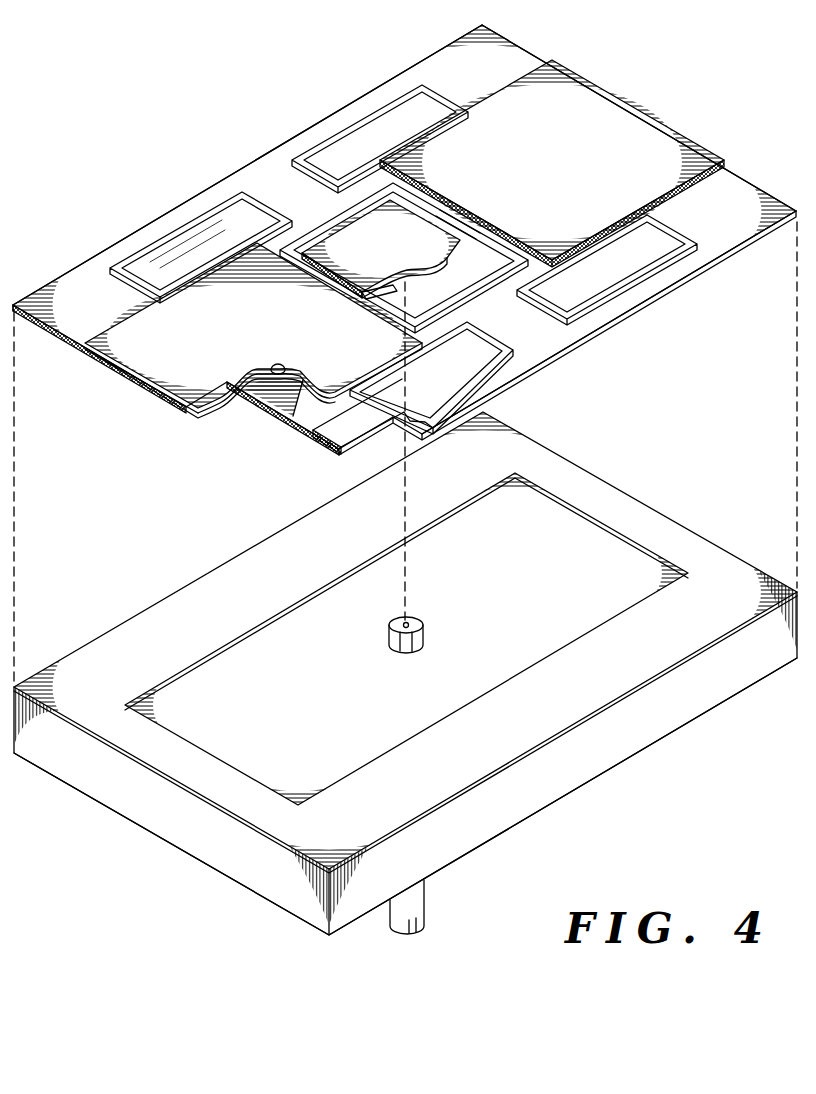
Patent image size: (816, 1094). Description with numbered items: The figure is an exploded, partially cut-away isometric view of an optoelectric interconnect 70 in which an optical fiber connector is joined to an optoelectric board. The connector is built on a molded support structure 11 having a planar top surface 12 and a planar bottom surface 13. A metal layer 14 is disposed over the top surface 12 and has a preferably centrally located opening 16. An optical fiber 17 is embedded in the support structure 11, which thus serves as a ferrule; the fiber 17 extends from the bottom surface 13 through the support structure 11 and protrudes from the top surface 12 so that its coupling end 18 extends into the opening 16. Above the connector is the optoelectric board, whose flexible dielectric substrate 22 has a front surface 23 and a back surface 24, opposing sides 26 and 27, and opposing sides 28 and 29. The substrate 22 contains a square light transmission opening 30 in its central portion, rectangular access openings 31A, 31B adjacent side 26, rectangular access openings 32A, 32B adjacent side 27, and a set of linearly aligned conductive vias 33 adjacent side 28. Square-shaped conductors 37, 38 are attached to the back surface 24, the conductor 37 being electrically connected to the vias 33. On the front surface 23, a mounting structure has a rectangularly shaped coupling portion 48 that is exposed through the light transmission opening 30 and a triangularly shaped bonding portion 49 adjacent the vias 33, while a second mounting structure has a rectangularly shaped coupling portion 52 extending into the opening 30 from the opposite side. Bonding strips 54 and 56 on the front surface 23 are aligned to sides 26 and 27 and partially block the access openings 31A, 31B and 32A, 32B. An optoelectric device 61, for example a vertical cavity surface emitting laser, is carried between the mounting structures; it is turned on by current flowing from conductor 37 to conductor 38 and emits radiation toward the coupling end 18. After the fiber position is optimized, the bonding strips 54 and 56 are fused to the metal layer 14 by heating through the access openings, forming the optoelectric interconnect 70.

The support structure 11 is at (150, 826).
The top surface 12 is at (290, 725).
The bottom surface 13 is at (628, 759).
The metal layer 14 is at (644, 505).
The opening 16 is at (314, 596).
The optical fiber 17 is at (398, 653).
The coupling end 18 is at (410, 621).
The substrate 22 is at (92, 306).
The front surface 23 is at (649, 304).
The back surface 24 is at (207, 197).
The side 26 is at (745, 249).
The side 27 is at (66, 273).
The side 28 is at (68, 340).
The side 29 is at (745, 181).
The light transmission opening 30 is at (498, 250).
The access opening 31A is at (506, 338).
The access opening 31B is at (688, 238).
The access opening 32A is at (293, 220).
The access opening 32B is at (464, 108).
The vias 33 is at (279, 364).
The conductor 37 is at (226, 338).
The conductor 38 is at (568, 178).
The rectangularly shaped coupling portion 48 is at (358, 302).
The triangularly shaped bonding portion 49 is at (287, 418).
The rectangularly shaped coupling portion 52 is at (466, 230).
The bonding strip 54 is at (318, 448).
The bonding strip 56 is at (153, 273).
The optoelectric device 61 is at (406, 246).
The optoelectric interconnect 70 is at (670, 891).